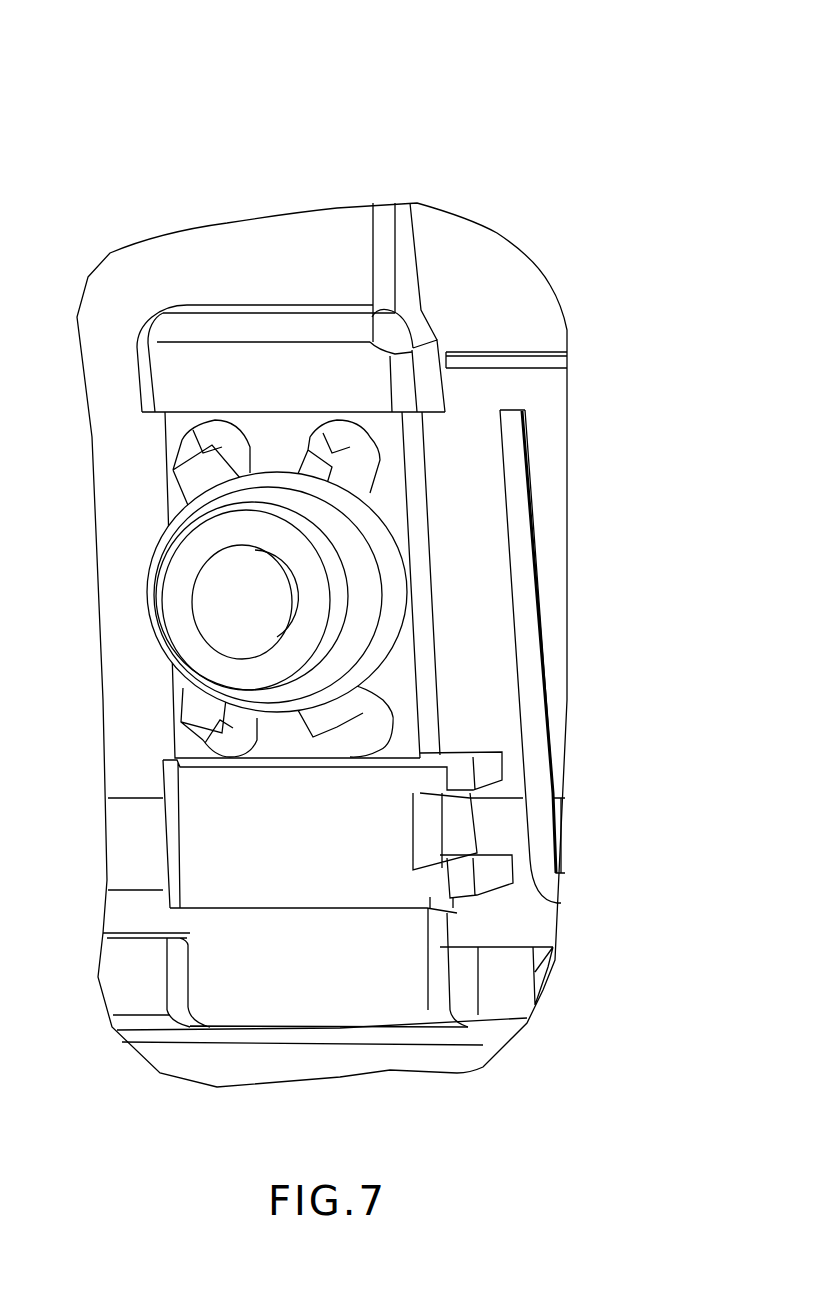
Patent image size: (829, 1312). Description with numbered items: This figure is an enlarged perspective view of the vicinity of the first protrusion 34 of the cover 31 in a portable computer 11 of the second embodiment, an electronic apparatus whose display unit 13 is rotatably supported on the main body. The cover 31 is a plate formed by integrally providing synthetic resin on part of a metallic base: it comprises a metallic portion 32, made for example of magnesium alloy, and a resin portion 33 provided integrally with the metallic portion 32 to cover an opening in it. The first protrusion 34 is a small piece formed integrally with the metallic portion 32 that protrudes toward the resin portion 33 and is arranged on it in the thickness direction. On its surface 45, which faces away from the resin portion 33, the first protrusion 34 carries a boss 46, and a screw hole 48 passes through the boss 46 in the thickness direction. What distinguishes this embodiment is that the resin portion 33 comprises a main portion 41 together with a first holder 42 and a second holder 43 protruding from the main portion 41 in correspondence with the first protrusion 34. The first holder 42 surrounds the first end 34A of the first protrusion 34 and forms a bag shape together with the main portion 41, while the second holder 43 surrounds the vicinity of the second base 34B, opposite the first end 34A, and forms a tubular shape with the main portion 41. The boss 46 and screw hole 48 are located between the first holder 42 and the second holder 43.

The portable computer 11 is at (474, 82).
The display unit 13 is at (508, 158).
The cover 31 is at (517, 267).
The metallic portion 32 is at (547, 927).
The resin portion 33 is at (337, 208).
The first protrusion 34 is at (450, 457).
The first end 34A is at (170, 425).
The second base 34B is at (187, 818).
The main portion 41 is at (497, 582).
The first holder 42 is at (433, 352).
The second holder 43 is at (403, 833).
The surface 45 is at (165, 507).
The boss 46 is at (392, 636).
The screw hole 48 is at (270, 615).